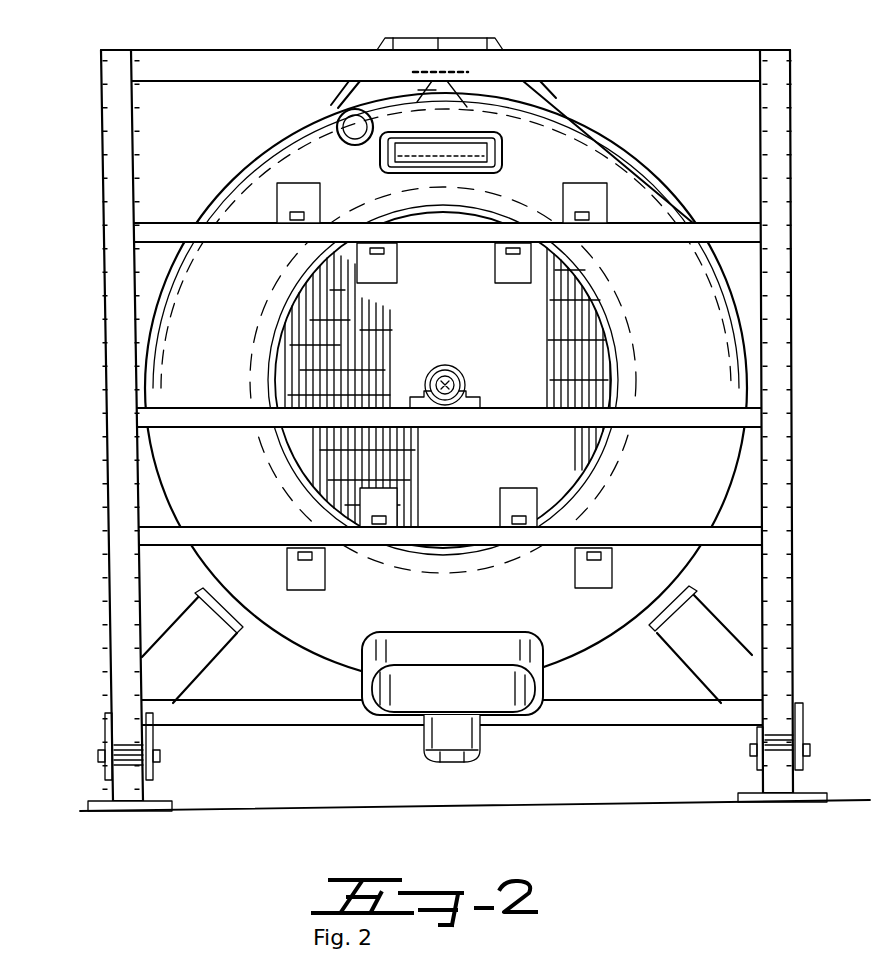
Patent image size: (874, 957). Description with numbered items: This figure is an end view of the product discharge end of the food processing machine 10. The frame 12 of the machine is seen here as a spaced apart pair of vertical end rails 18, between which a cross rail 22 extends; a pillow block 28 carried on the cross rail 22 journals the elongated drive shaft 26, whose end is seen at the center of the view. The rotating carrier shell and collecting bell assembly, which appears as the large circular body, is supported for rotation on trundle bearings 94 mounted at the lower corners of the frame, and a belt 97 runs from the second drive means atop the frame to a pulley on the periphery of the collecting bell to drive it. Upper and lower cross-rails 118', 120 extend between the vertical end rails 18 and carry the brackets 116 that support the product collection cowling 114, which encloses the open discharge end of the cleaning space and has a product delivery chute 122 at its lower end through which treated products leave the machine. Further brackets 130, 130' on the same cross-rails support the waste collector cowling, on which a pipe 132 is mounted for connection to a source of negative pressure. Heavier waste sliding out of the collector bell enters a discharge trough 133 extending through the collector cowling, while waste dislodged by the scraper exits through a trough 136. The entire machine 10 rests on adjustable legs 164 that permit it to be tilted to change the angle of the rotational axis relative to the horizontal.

The food processing machine 10 is at (101, 359).
The frame 12 is at (101, 184).
The vertical end rails 18 is at (110, 516).
The cross rail 22 is at (206, 408).
The drive shaft 26 is at (462, 372).
The pillow blocks 28 is at (441, 372).
The trundle bearings 94 is at (455, 88).
The belt 97 is at (555, 107).
The product collection cowling 114 is at (443, 380).
The brackets 116 is at (495, 266).
The upper cross beam 118' is at (446, 249).
The lower cross-rail 120 is at (660, 527).
The product delivery chute 122 is at (503, 705).
The brackets 130 is at (446, 382).
The mounting block 130' is at (311, 187).
The pipe 132 is at (338, 125).
The discharge trough 133 is at (421, 752).
The trough 136 is at (500, 140).
The adjustable legs 164 is at (150, 770).